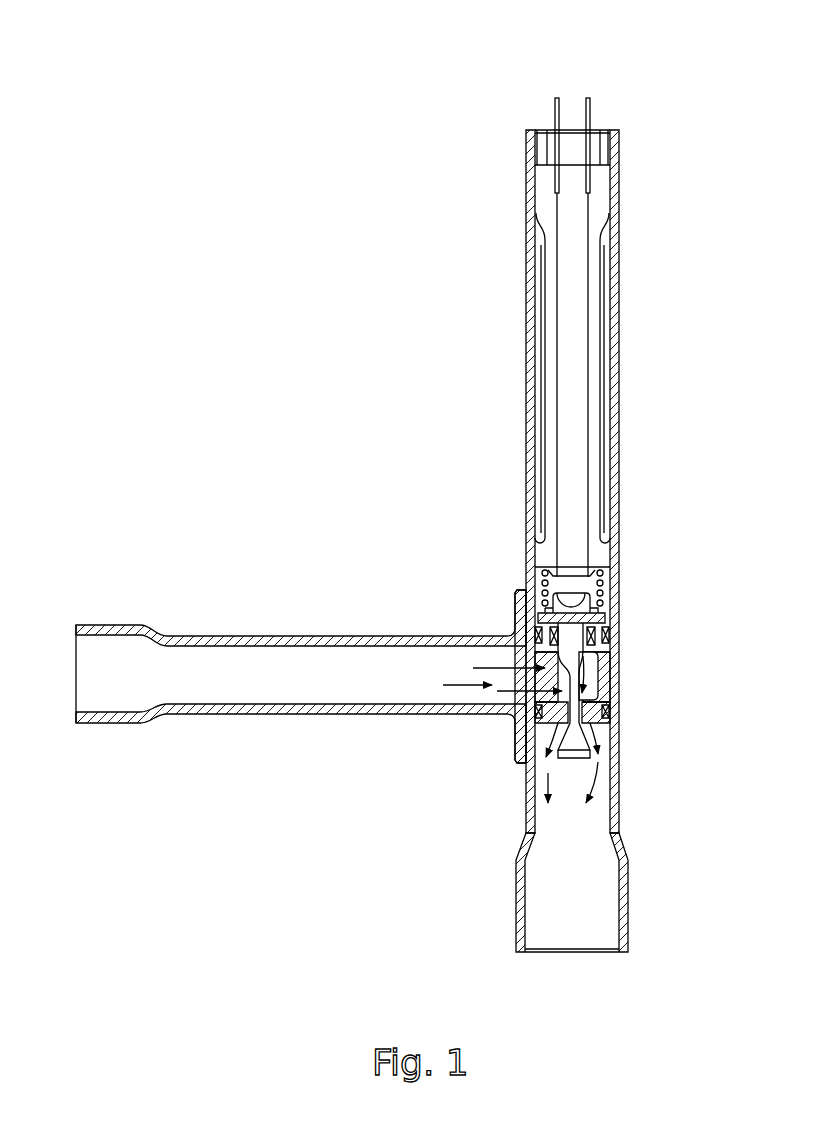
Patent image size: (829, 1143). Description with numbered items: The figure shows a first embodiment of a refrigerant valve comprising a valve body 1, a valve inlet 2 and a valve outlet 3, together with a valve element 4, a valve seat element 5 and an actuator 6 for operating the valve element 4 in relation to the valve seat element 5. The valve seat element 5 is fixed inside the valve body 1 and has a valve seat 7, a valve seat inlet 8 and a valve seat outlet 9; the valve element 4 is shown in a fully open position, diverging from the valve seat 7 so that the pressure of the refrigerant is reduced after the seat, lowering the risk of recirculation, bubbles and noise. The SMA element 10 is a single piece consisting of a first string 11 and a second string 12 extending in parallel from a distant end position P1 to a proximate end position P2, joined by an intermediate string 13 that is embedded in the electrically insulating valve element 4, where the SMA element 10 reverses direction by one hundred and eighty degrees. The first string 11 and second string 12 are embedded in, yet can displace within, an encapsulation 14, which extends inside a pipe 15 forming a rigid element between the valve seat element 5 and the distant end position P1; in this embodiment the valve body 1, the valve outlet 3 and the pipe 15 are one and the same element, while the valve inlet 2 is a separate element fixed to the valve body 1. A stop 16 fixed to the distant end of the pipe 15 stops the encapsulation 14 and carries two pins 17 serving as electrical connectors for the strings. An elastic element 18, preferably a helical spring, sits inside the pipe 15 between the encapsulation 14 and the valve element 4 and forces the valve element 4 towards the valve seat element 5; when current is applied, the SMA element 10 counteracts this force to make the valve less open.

The valve body 1 is at (613, 685).
The valve inlet 2 is at (225, 650).
The valve outlet 3 is at (597, 898).
The valve element 4 is at (598, 690).
The valve seat element 5 is at (605, 662).
The actuator 6 is at (518, 347).
The valve seat 7 is at (599, 730).
The valve seat inlet 8 is at (530, 685).
The valve seat outlet 9 is at (532, 735).
The SMA element 10 is at (553, 300).
The first string 11 is at (557, 400).
The second string 12 is at (589, 410).
The intermediate string 13 is at (568, 598).
The encapsulation 14 is at (593, 320).
The pipe 15 is at (612, 275).
The stop 16 is at (607, 150).
The pins 17 is at (588, 92).
The elastic element 18 is at (603, 592).
The distant end position P1 is at (520, 153).
The proximate end position P2 is at (507, 580).